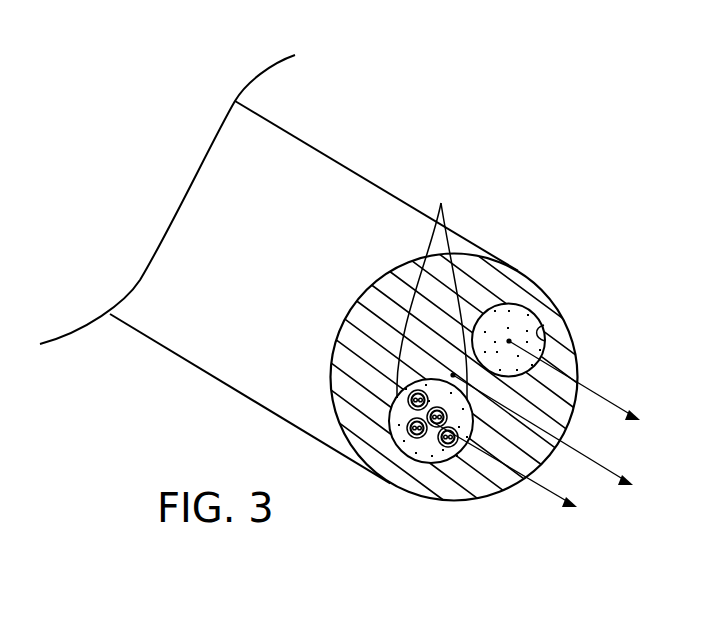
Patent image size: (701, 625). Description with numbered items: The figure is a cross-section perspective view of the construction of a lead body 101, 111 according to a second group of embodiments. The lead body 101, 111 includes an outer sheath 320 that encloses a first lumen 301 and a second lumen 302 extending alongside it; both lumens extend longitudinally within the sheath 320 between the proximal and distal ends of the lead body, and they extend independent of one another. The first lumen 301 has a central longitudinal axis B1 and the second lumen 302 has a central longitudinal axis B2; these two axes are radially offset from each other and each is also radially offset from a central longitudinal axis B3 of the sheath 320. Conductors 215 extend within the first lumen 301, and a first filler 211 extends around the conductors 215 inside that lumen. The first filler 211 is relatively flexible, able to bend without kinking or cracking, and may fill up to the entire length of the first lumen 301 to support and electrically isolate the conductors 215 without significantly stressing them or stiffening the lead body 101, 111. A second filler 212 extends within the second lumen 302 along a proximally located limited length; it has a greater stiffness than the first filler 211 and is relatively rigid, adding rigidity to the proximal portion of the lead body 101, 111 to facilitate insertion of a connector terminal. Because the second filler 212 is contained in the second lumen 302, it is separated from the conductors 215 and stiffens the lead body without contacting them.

The lead body 101 is at (279, 269).
The lead body 111 is at (294, 179).
The outer sheath 320 is at (356, 381).
The second filler 212 is at (517, 323).
The second lumen 302 is at (545, 342).
The first lumen 301 is at (417, 449).
The first filler 211 is at (392, 420).
The conductors 215 is at (448, 427).
The central longitudinal axis of first lumen B1 is at (518, 473).
The central longitudinal axis of second lumen B2 is at (590, 389).
The central longitudinal axis of sheath B3 is at (558, 437).